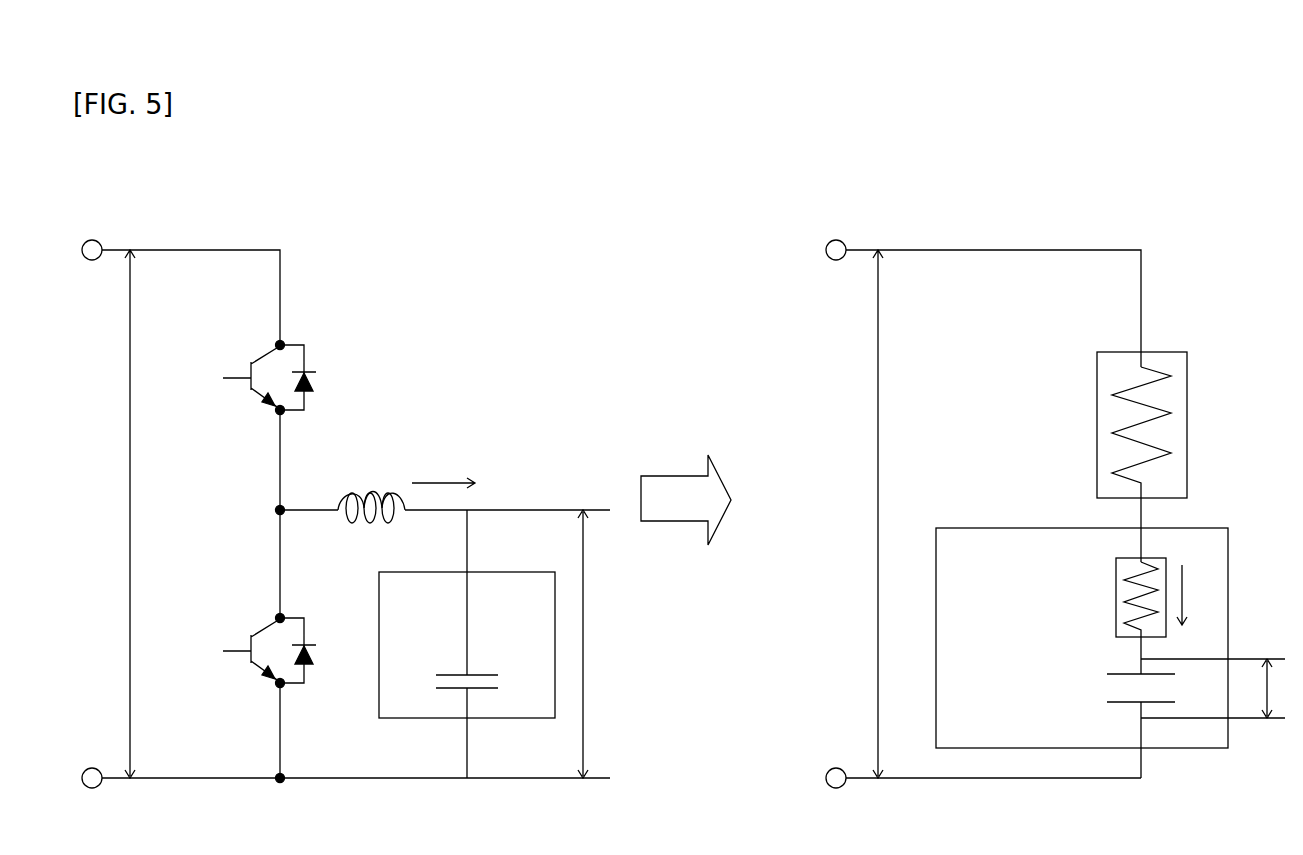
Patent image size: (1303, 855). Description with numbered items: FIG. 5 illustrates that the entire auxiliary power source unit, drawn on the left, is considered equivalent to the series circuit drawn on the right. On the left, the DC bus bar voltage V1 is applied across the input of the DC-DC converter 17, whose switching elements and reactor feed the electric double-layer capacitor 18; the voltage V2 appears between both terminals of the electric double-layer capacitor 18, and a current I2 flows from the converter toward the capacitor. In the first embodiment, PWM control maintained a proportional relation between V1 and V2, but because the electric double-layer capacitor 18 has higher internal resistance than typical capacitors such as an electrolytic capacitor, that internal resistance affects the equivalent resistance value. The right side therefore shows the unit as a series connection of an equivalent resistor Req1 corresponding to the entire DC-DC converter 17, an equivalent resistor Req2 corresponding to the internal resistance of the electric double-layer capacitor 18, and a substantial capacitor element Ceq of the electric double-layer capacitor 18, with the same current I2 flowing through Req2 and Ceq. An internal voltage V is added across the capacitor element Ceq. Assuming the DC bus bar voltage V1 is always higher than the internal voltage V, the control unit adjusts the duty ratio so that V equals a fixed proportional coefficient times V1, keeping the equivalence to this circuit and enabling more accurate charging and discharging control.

The DC-DC converter 17 is at (403, 382).
The electric double-layer capacitor 18 is at (380, 606).
The equivalent resistor Req1 is at (1107, 425).
The equivalent resistor Req2 is at (1108, 616).
The capacitor element Ceq is at (1113, 726).
The DC bus bar voltage V1 is at (491, 514).
The voltage between both terminals of the electric double-layer capacitor V2 is at (602, 644).
The current I2 is at (811, 535).
The internal voltage V is at (1218, 688).